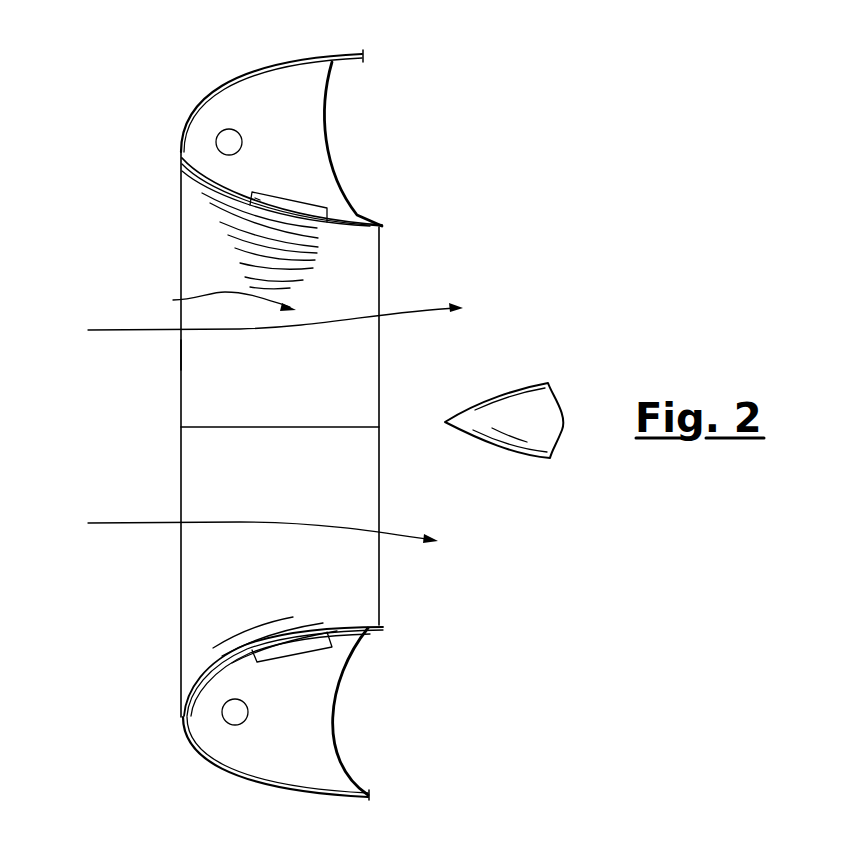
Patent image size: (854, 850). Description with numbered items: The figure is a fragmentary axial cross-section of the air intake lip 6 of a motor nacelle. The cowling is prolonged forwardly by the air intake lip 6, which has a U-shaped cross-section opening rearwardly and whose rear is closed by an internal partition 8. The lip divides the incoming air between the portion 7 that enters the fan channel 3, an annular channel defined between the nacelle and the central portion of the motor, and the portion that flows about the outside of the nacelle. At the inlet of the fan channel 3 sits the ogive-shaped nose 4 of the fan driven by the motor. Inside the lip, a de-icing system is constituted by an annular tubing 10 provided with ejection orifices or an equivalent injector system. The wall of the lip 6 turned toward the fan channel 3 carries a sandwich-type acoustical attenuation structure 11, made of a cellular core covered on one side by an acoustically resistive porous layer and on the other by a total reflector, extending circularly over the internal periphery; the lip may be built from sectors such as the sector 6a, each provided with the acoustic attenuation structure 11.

The fan channel 3 is at (173, 300).
The nose of the fan 4 is at (518, 378).
The air intake lip 6 is at (168, 122).
The sector 6a is at (198, 355).
The portion of air 7 is at (110, 330).
The internal partition 8 is at (328, 146).
The annular tubing 10 is at (221, 126).
The acoustical attenuation structure 11 is at (217, 192).